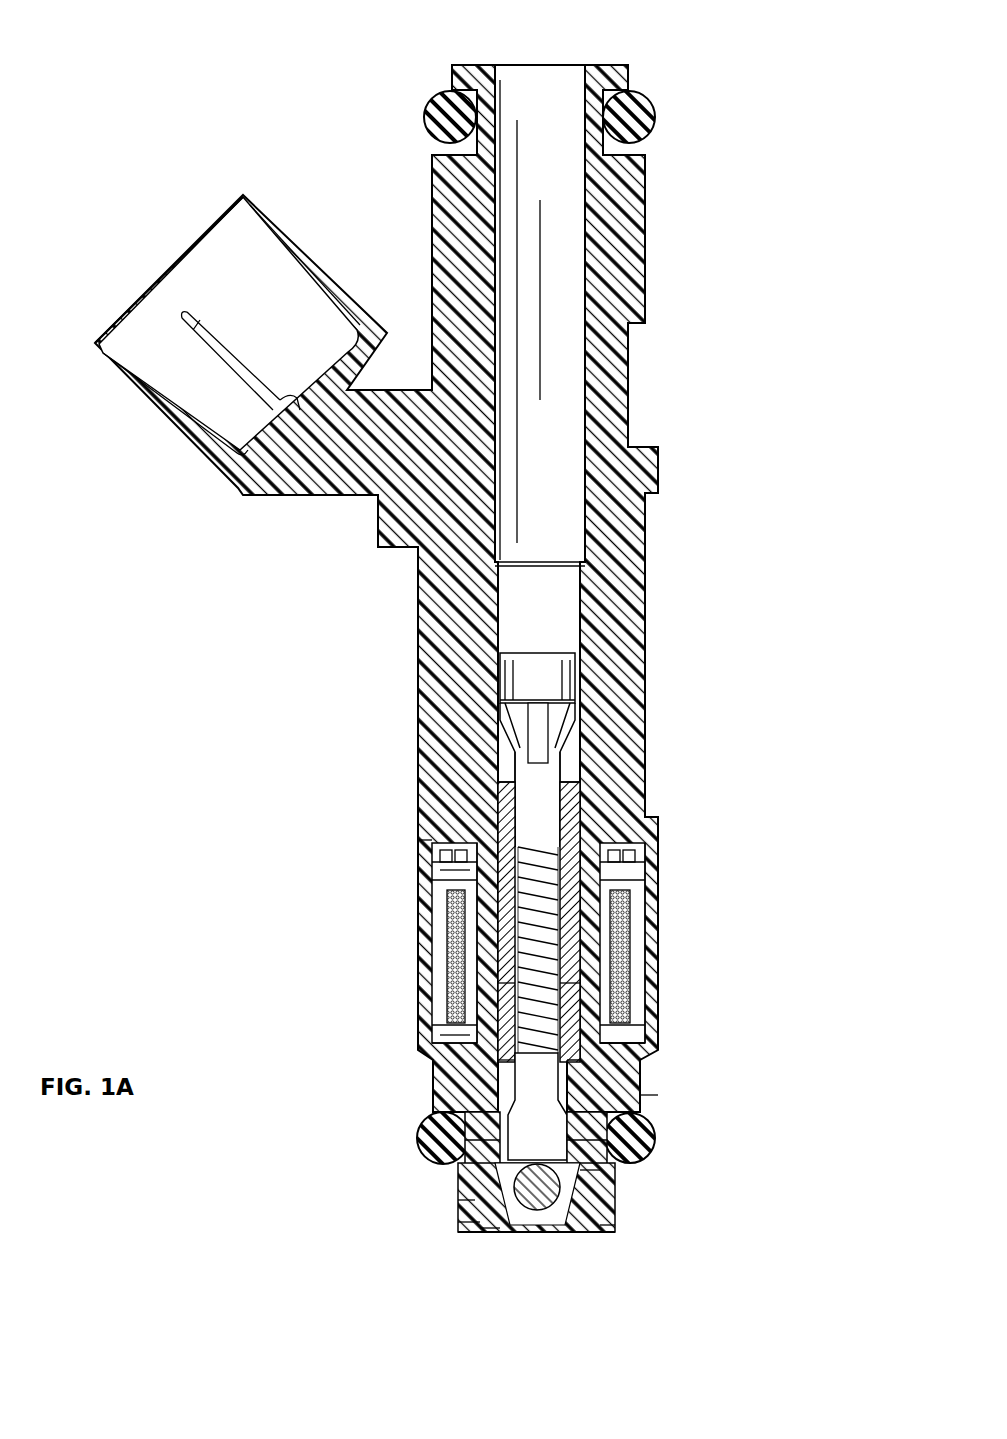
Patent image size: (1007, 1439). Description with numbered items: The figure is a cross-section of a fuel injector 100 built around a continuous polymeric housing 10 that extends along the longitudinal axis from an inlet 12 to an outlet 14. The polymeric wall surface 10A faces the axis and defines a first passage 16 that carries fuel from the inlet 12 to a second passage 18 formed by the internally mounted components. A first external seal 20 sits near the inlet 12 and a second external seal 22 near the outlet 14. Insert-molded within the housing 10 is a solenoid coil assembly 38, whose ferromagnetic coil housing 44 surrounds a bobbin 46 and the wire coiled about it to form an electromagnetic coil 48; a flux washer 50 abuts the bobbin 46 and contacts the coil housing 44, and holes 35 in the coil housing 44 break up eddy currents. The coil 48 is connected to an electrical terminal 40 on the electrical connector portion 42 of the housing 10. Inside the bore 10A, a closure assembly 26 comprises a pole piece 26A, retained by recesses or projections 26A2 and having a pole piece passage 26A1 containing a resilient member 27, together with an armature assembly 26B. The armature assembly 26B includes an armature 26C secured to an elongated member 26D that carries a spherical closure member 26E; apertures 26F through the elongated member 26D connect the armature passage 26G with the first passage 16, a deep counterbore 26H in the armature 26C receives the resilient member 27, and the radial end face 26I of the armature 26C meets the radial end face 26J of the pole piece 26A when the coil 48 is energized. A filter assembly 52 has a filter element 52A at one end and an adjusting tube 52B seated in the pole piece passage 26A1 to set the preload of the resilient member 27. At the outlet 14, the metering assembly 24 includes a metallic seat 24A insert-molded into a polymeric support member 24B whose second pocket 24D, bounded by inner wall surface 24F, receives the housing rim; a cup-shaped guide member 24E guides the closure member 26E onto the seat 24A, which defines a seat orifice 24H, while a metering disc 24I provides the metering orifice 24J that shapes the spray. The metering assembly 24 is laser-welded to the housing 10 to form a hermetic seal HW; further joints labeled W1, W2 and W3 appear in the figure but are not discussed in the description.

The polymeric housing 10 is at (630, 213).
The polymeric wall surface 10A is at (625, 183).
The inlet 12 is at (583, 47).
The outlet 14 is at (580, 1238).
The first passage 16 is at (560, 263).
The second passage 18 is at (573, 763).
The first external seal 20 is at (633, 113).
The second external seal 22 is at (432, 1140).
The metering assembly 24 is at (433, 1192).
The seat 24A is at (490, 1227).
The polymeric support member 24B is at (460, 1222).
The second pocket 24D is at (470, 1210).
The cup-shaped guide member 24E is at (490, 1105).
The inner wall surface 24F is at (435, 1135).
The seat orifice 24H is at (543, 1225).
The metering disc 24I is at (528, 1232).
The metering orifice 24J is at (513, 1233).
The closure assembly 26 is at (292, 988).
The pole piece 26A is at (462, 915).
The pole piece passage 26A1 is at (520, 805).
The recesses or projections 26A2 is at (515, 850).
The armature assembly 26B is at (462, 985).
The armature 26C is at (600, 1052).
The elongated member 26D is at (643, 1130).
The closure member 26E is at (613, 1230).
The aperture 26F is at (470, 1070).
The armature passage 26G is at (608, 1075).
The deep counterbore 26H is at (625, 1020).
The radial end face of the armature 26I is at (640, 1000).
The radial end face of the pole piece 26J is at (640, 897).
The resilient member 27 is at (577, 797).
The holes 35 is at (640, 990).
The solenoid coil assembly 38 is at (660, 932).
The electrical terminal 40 is at (280, 412).
The electrical connector portion 42 is at (240, 495).
The coil housing 44 is at (470, 1030).
The bobbin 46 is at (417, 860).
The electromagnetic coil 48 is at (658, 872).
The flux washer 50 is at (610, 830).
The filter assembly 52 is at (577, 690).
The filter element 52A is at (545, 700).
The adjusting tube 52B is at (500, 760).
The fuel injector 100 is at (806, 152).
The hermetic seal HW is at (610, 1215).
The first weld W1 is at (642, 1098).
The second weld W2 is at (597, 1173).
The third weld W3 is at (593, 1253).